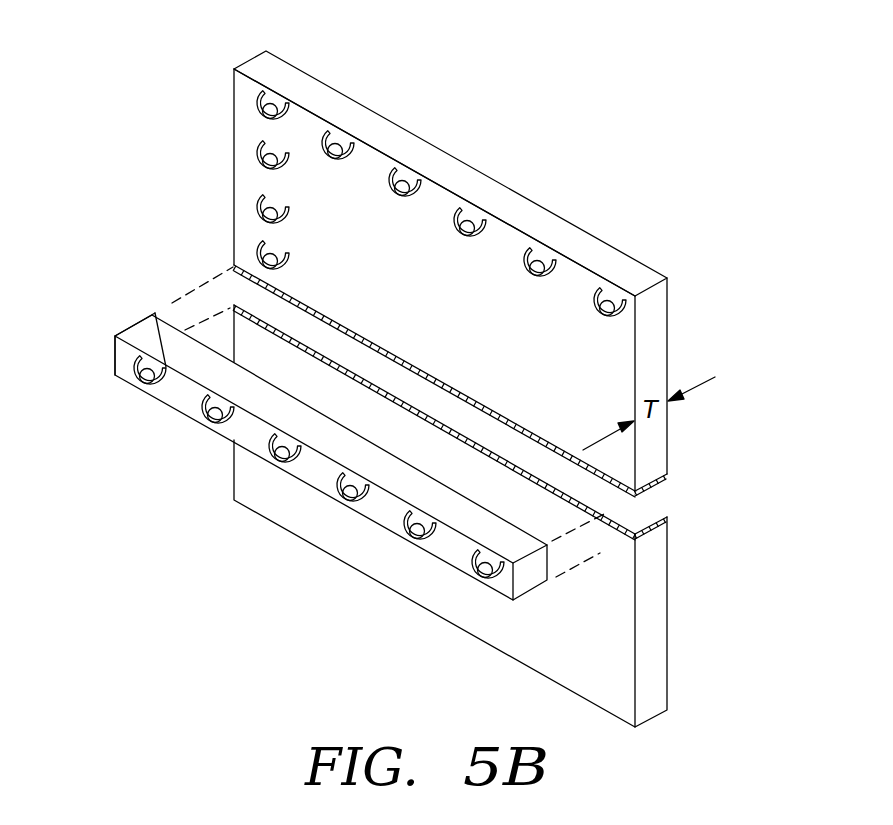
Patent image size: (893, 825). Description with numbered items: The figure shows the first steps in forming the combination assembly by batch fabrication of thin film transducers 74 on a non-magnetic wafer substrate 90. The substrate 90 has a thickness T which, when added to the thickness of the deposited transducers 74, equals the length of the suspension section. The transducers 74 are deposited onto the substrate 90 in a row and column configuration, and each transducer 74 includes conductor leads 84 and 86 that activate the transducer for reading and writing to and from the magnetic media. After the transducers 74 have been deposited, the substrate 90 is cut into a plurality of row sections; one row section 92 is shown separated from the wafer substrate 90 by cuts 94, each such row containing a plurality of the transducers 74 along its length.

The thin film transducers 74 is at (462, 233).
The conductor lead 84 is at (130, 328).
The conductor lead 86 is at (158, 314).
The wafer substrate 90 is at (612, 271).
The row section 92 is at (115, 359).
The cuts 94 is at (663, 482).